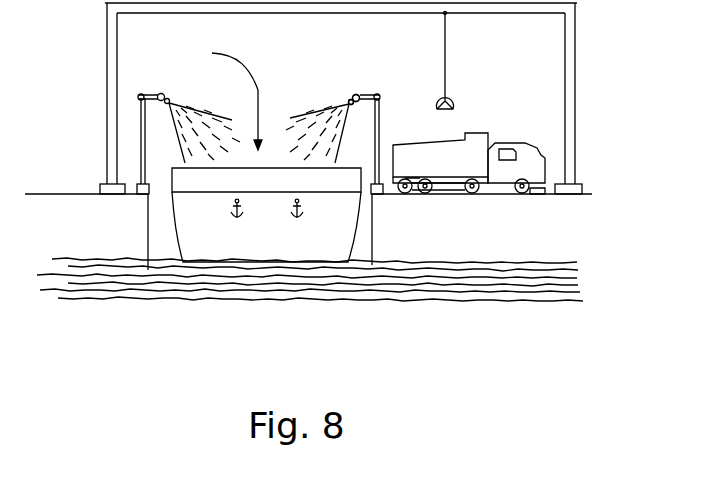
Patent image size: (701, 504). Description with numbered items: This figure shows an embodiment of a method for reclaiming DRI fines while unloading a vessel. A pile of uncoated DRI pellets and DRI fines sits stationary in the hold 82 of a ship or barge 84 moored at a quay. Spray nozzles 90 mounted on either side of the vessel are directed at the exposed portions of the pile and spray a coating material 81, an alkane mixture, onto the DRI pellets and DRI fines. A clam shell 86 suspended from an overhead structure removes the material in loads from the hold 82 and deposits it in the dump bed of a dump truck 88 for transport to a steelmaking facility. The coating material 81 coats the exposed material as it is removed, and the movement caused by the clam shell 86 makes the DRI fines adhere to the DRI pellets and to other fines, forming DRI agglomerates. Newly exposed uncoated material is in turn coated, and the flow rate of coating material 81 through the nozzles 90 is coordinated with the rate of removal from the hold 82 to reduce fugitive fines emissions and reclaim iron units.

The coating material 81 is at (304, 104).
The hold 82 is at (221, 96).
The ship or barge 84 is at (281, 244).
The clam shell 86 is at (455, 102).
The dump truck 88 is at (428, 172).
The spray nozzles 90 is at (357, 94).